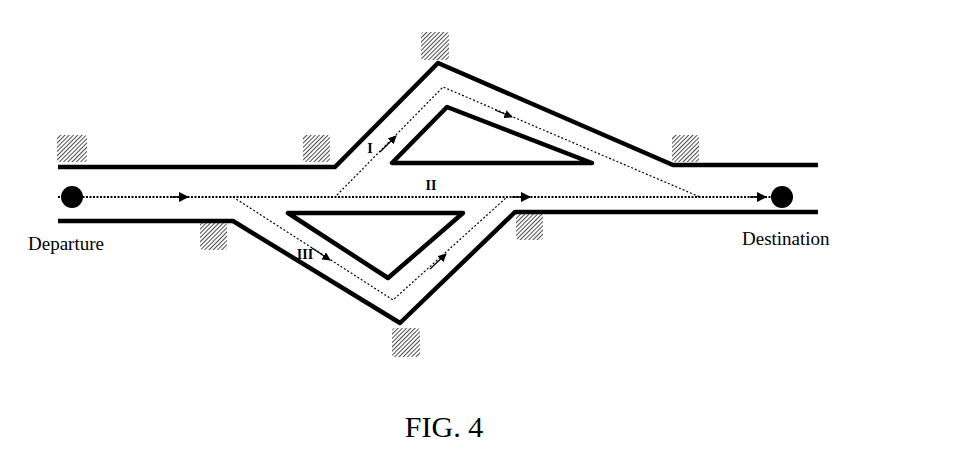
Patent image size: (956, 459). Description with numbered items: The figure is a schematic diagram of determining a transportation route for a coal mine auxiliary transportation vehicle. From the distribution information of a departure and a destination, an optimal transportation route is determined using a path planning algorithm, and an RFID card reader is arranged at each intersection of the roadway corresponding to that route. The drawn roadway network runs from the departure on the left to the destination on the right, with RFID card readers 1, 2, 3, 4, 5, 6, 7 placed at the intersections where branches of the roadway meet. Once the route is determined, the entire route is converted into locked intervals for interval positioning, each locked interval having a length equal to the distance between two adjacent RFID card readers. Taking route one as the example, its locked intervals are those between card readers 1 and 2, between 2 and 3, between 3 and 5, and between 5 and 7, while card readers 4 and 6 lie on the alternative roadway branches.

The RFID card reader 1 is at (72, 137).
The RFID card reader 2 is at (213, 249).
The RFID card reader 3 is at (316, 137).
The RFID card reader 4 is at (406, 352).
The RFID card reader 5 is at (435, 33).
The RFID card reader 6 is at (529, 239).
The RFID card reader 7 is at (685, 137).